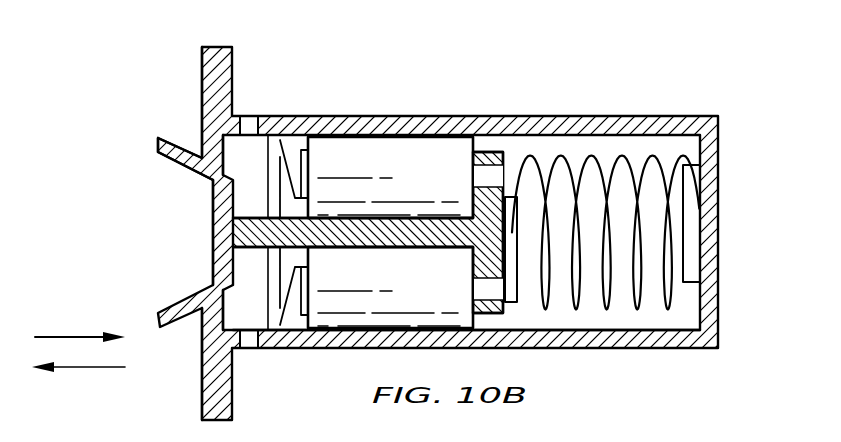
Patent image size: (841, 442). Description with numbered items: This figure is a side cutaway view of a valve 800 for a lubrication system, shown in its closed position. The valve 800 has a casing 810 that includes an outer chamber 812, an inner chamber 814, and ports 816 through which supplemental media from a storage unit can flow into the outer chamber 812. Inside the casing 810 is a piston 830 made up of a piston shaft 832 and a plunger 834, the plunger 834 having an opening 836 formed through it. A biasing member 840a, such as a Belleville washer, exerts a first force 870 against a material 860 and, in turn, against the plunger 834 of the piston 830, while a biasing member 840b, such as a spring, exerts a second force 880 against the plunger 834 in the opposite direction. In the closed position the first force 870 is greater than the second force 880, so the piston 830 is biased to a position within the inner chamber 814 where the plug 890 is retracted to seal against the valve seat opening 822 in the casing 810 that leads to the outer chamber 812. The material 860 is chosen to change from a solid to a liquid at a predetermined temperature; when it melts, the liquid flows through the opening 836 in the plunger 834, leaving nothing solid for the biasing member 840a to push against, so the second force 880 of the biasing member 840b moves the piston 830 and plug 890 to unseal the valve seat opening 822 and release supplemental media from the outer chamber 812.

The valve 800 is at (649, 85).
The casing 810 is at (509, 107).
The outer chamber 812 is at (213, 181).
The inner chamber 814 is at (540, 324).
The port 816 is at (252, 127).
The valve seat opening 822 is at (203, 157).
The piston 830 is at (367, 267).
The piston shaft 832 is at (260, 234).
The plunger 834 is at (454, 232).
The opening 836 is at (488, 175).
The biasing member 840a is at (282, 142).
The biasing member 840b is at (594, 321).
The material 860 is at (388, 153).
The first force 870 is at (87, 335).
The second force 880 is at (90, 368).
The plug 890 is at (213, 213).